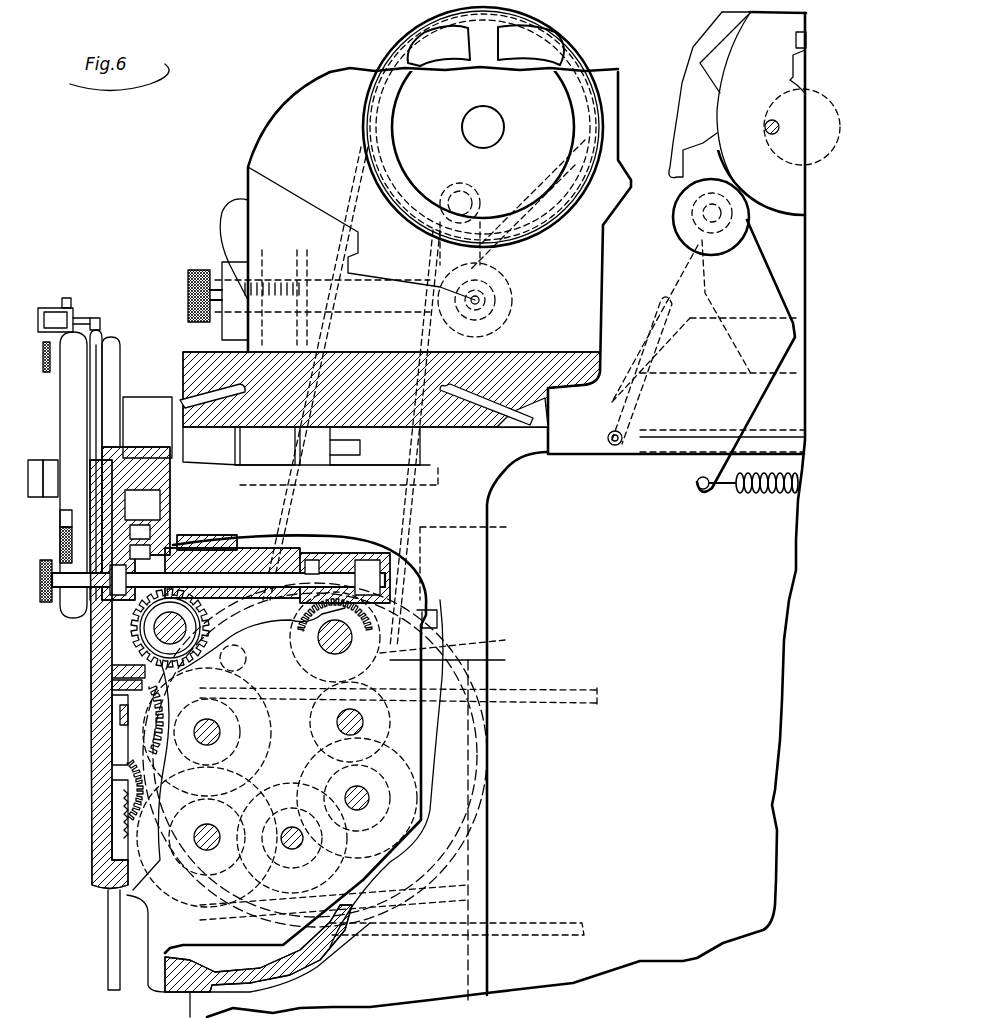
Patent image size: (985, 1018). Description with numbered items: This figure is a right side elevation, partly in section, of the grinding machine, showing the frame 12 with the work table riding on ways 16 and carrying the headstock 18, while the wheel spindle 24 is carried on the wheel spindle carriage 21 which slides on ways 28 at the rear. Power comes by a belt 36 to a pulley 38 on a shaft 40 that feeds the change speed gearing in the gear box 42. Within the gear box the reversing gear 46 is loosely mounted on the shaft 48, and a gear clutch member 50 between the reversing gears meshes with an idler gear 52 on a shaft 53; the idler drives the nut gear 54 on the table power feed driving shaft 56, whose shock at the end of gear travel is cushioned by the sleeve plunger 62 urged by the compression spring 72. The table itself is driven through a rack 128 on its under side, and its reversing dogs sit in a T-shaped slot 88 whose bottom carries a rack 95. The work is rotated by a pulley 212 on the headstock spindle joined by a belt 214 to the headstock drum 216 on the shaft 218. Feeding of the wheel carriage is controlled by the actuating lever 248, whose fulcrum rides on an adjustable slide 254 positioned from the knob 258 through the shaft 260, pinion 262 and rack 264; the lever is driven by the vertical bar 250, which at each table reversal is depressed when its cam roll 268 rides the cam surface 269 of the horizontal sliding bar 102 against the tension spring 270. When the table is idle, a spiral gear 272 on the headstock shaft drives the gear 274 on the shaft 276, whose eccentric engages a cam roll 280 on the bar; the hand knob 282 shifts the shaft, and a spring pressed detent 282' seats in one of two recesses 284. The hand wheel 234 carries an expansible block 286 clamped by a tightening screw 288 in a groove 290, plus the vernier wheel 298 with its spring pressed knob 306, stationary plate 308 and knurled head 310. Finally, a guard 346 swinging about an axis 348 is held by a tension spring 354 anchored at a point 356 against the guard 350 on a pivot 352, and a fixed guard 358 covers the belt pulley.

The frame 12 is at (506, 514).
The ways 16 is at (514, 470).
The headstock 18 is at (330, 80).
The wheel spindle carriage 21 is at (803, 146).
The wheel spindle 24 is at (780, 102).
The ways 28 is at (722, 424).
The belt 36 is at (552, 930).
The pulley 38 is at (287, 908).
The shaft 40 is at (370, 797).
The gear box 42 is at (420, 757).
The gear 46 is at (285, 722).
The shaft 48 is at (225, 713).
The gear clutch member 50 is at (242, 824).
The idler gear 52 is at (202, 626).
The shaft 53 is at (318, 640).
The gear 54 is at (194, 616).
The driving shaft 56 is at (239, 749).
The sleeve plunger 62 is at (175, 640).
The compression spring 72 is at (110, 670).
The T-shaped slot 88 is at (183, 370).
The rack 95 is at (200, 358).
The horizontal sliding bar 102 is at (112, 686).
The rack 128 is at (330, 446).
The pulley 212 is at (412, 50).
The belt 214 is at (483, 560).
The headstock drum 216 is at (461, 639).
The shaft 218 is at (466, 658).
The hand wheel 234 is at (62, 425).
The actuating lever 248 is at (135, 502).
The vertical bar 250 is at (110, 797).
The adjustable slide 254 is at (150, 520).
The knob 258 is at (60, 522).
The shaft 260 is at (60, 542).
The pinion 262 is at (150, 548).
The rack 264 is at (150, 530).
The cam roll 268 is at (115, 740).
The cam surface 269 is at (118, 712).
The tension spring 270 is at (110, 822).
The spiral gear 272 is at (360, 622).
The gear 274 is at (352, 555).
The shaft 276 is at (240, 575).
The cam roll 280 is at (118, 600).
The hand knob 282 is at (37, 591).
The spring pressed detent 282' is at (338, 540).
The recesses 284 is at (290, 550).
The expansible block 286 is at (112, 345).
The tightening screw 288 is at (96, 332).
The groove 290 is at (96, 380).
The vernier wheel 298 is at (95, 318).
The spring pressed knob 306 is at (70, 308).
The stationary plate 308 is at (88, 300).
The knurled head 310 is at (45, 362).
The guard 346 is at (665, 262).
The axis 348 is at (718, 205).
The guard 350 is at (660, 335).
The pivot 352 is at (608, 438).
The tension spring 354 is at (762, 494).
The point 356 is at (698, 485).
The fixed guard 358 is at (713, 28).